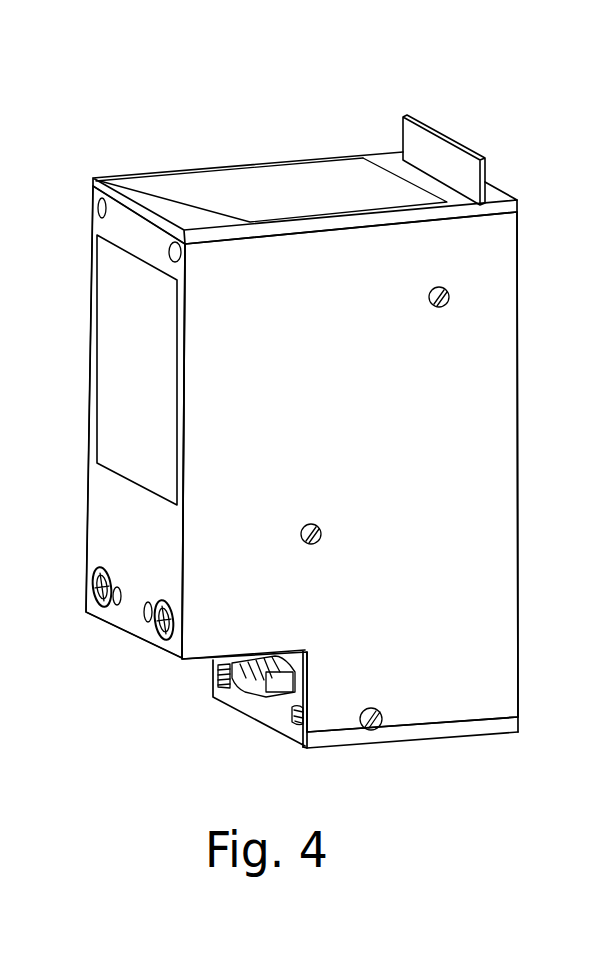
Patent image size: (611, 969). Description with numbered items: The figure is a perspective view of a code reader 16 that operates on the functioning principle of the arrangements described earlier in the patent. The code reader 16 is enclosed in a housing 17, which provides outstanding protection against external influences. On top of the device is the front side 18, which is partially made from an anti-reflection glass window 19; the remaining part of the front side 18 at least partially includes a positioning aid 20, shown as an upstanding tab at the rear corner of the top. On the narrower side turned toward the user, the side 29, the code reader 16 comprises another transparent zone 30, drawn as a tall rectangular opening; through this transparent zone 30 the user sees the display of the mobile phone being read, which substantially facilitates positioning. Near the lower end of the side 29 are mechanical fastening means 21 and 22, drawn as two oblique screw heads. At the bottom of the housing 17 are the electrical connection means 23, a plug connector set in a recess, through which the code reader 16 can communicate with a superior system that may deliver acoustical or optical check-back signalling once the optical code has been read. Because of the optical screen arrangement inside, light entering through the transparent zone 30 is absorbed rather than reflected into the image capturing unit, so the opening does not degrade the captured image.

The code reader 16 is at (458, 95).
The housing 17 is at (340, 444).
The front side 18 is at (148, 192).
The anti-reflection glass window 19 is at (322, 200).
The positioning aid 20 is at (488, 168).
The mechanical fastening means 21 is at (102, 607).
The mechanical fastening means 22 is at (147, 617).
The electrical connection means 23 is at (249, 683).
The side turned toward the user 29 is at (152, 554).
The transparent zone 30 is at (153, 386).